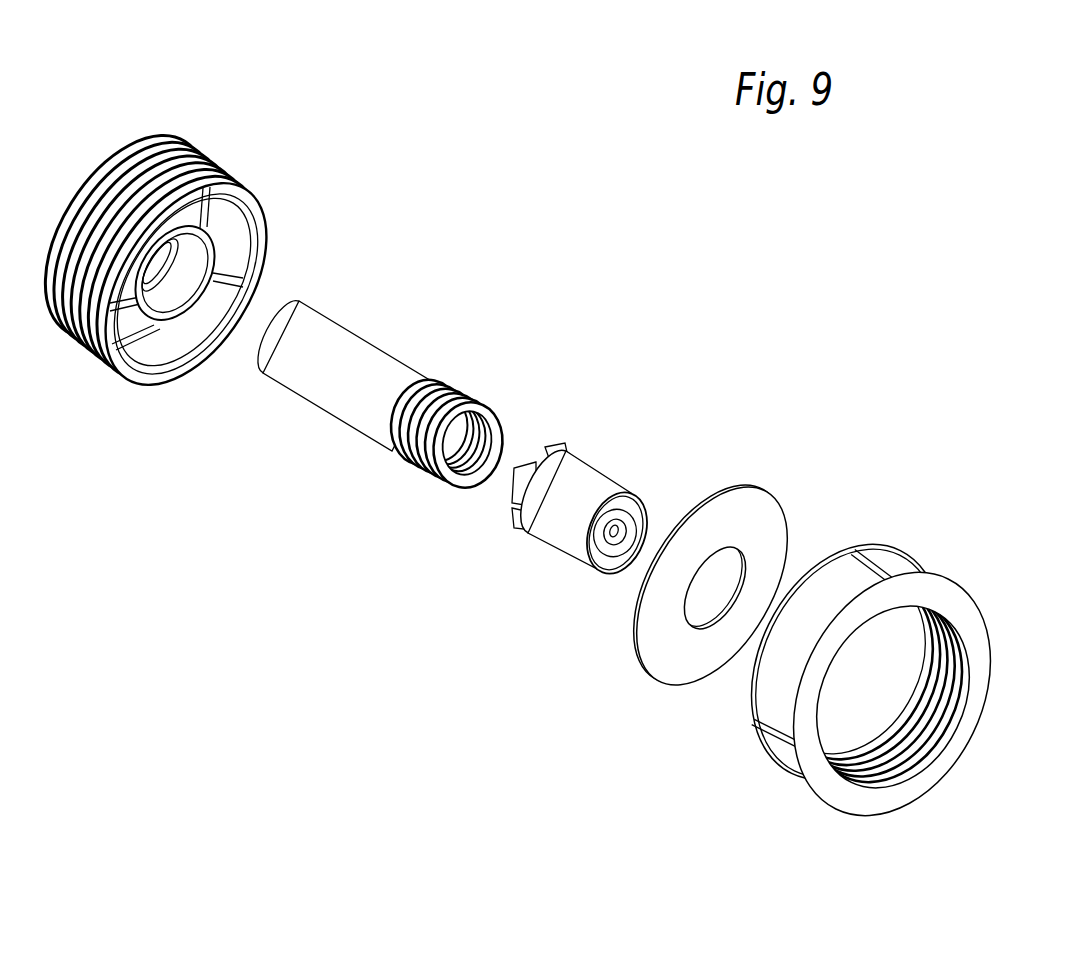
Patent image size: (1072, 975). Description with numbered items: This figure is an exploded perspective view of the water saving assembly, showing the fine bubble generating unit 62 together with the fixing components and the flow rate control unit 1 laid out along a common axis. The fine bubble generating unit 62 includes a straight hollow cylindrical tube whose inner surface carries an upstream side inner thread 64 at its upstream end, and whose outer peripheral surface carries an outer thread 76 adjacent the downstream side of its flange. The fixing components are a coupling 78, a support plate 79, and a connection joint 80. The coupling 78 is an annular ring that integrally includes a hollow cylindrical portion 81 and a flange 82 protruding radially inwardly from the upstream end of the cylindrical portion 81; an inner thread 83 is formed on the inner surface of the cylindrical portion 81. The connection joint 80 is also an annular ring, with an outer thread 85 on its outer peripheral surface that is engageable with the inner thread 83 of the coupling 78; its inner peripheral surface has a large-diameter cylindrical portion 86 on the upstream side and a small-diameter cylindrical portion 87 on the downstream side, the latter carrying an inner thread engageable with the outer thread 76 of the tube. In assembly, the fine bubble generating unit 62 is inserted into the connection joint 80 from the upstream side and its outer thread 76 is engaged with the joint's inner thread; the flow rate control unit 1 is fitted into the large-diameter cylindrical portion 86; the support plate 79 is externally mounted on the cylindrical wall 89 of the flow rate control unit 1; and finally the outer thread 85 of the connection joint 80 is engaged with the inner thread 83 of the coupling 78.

The flow rate control unit 1 is at (607, 472).
The fine bubble generating unit 62 is at (372, 340).
The upstream side inner thread 64 is at (468, 488).
The outer thread 76 is at (478, 398).
The coupling 78 is at (934, 553).
The support plate 79 is at (767, 493).
The connection joint 80 is at (208, 152).
The hollow cylindrical portion 81 is at (780, 768).
The flange 82 is at (873, 793).
The inner thread 83 is at (937, 716).
The outer thread 85 is at (128, 148).
The large-diameter cylindrical portion 86 is at (162, 320).
The small-diameter cylindrical portion 87 is at (245, 280).
The cylindrical wall 89 is at (573, 525).